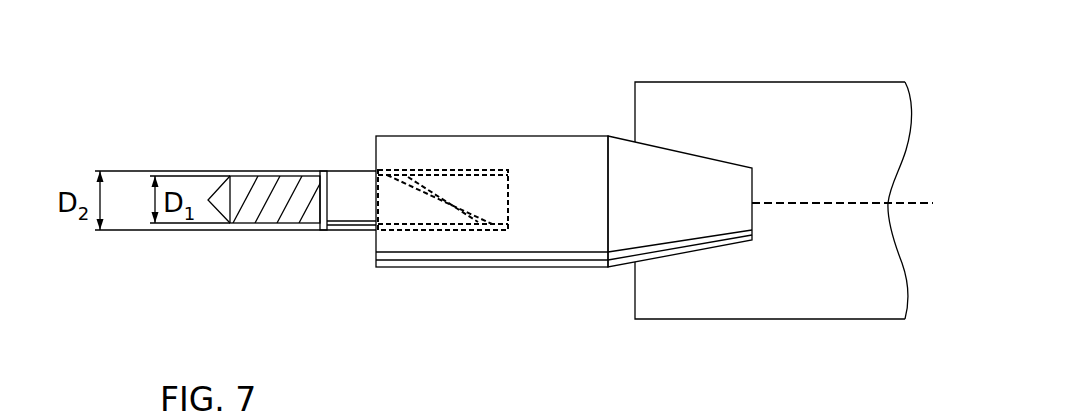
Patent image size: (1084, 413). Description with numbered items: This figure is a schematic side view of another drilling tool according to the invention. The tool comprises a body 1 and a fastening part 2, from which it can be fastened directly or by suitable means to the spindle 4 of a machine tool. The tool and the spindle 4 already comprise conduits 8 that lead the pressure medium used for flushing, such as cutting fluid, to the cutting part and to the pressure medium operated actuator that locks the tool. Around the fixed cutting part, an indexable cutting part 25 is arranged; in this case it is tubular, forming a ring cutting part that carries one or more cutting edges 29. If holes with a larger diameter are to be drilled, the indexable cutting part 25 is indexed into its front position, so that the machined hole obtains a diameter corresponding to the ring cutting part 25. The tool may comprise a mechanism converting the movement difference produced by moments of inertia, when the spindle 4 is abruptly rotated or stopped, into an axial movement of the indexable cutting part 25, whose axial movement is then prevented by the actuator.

The body 1 is at (557, 150).
The fastening part 2 is at (700, 144).
The spindle 4 is at (708, 82).
The conduit 8 is at (815, 202).
The indexable cutting part 25 is at (362, 184).
The cutting edge 29 is at (318, 227).